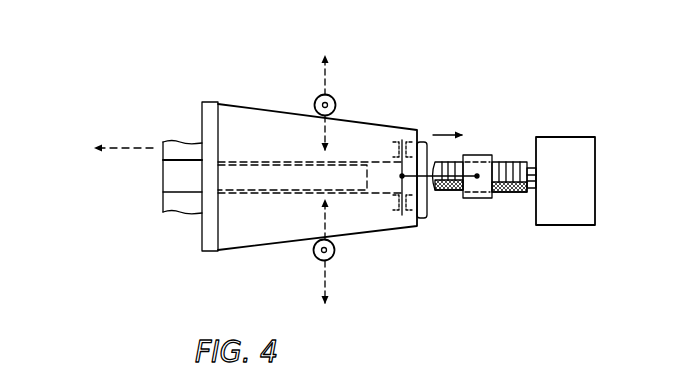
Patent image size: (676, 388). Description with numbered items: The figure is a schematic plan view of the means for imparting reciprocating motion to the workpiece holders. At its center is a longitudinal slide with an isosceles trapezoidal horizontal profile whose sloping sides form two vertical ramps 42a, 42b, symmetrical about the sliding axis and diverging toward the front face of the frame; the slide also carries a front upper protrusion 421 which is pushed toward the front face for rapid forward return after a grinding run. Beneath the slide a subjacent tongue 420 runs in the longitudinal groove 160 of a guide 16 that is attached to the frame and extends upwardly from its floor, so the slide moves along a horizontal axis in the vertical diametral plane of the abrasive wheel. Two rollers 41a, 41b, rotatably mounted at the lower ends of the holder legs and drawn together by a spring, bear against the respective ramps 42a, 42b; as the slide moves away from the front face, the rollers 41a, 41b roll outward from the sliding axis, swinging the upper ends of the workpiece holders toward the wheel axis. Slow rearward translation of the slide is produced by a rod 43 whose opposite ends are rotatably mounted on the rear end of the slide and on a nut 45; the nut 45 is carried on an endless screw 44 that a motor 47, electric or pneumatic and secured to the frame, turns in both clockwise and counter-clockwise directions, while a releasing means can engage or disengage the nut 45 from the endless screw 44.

The guide 16 is at (178, 208).
The longitudinal groove 160 is at (178, 182).
The front upper protrusion 421 is at (210, 108).
The ramp 42a is at (273, 150).
The ramp 42b is at (388, 126).
The subjacent tongue 420 is at (340, 172).
The roller 41a is at (313, 254).
The roller 41b is at (334, 101).
The rod 43 is at (428, 178).
The endless screw 44 is at (515, 161).
The nut 45 is at (480, 156).
The motor 47 is at (578, 143).